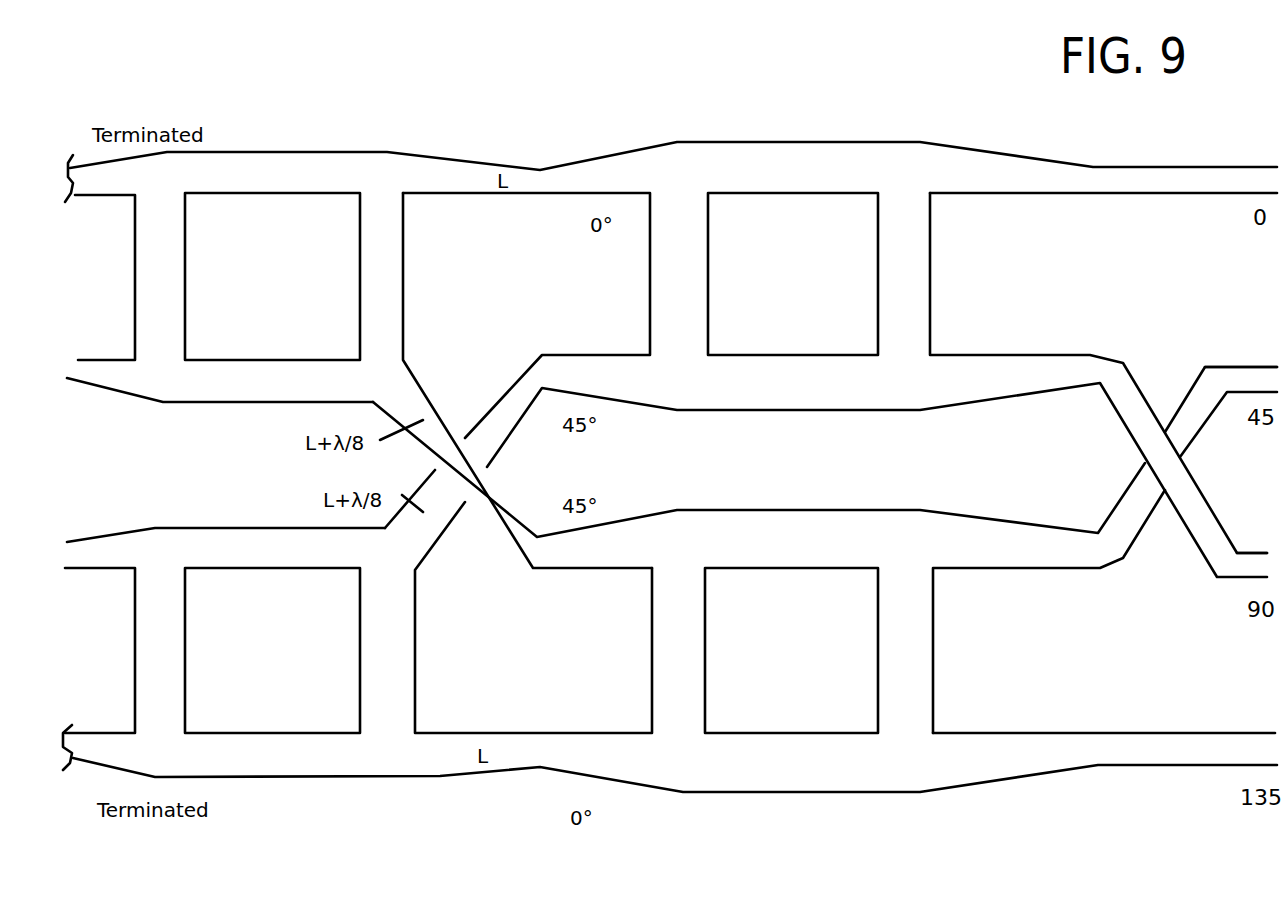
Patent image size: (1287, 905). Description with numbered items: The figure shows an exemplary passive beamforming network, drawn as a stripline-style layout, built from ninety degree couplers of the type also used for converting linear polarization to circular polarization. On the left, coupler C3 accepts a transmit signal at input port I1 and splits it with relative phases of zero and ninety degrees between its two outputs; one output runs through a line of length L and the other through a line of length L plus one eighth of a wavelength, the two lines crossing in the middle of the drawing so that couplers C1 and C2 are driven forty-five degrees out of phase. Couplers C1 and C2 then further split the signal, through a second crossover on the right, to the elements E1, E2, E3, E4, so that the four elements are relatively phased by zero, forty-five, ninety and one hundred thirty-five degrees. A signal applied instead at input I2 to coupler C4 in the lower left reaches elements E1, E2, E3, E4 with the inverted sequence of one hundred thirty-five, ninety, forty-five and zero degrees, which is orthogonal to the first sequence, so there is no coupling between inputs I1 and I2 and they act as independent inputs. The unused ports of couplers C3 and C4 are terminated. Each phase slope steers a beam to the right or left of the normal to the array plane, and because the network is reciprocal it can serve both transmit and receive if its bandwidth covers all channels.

The coupler C1 is at (793, 274).
The coupler C2 is at (791, 650).
The coupler C3 is at (272, 276).
The coupler C4 is at (272, 650).
The input port I1 is at (220, 298).
The input port I2 is at (225, 630).
The element E1 is at (1103, 169).
The element E2 is at (1241, 353).
The element E3 is at (1255, 540).
The element E4 is at (1104, 718).